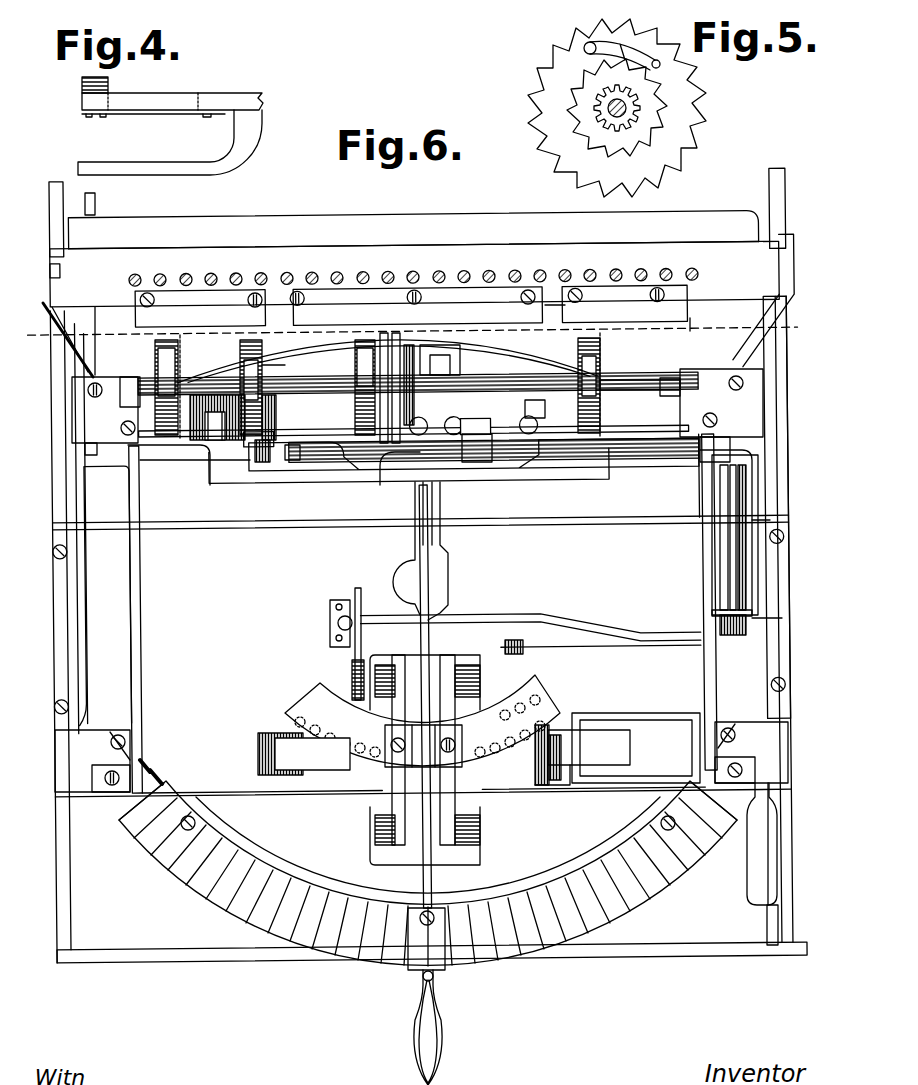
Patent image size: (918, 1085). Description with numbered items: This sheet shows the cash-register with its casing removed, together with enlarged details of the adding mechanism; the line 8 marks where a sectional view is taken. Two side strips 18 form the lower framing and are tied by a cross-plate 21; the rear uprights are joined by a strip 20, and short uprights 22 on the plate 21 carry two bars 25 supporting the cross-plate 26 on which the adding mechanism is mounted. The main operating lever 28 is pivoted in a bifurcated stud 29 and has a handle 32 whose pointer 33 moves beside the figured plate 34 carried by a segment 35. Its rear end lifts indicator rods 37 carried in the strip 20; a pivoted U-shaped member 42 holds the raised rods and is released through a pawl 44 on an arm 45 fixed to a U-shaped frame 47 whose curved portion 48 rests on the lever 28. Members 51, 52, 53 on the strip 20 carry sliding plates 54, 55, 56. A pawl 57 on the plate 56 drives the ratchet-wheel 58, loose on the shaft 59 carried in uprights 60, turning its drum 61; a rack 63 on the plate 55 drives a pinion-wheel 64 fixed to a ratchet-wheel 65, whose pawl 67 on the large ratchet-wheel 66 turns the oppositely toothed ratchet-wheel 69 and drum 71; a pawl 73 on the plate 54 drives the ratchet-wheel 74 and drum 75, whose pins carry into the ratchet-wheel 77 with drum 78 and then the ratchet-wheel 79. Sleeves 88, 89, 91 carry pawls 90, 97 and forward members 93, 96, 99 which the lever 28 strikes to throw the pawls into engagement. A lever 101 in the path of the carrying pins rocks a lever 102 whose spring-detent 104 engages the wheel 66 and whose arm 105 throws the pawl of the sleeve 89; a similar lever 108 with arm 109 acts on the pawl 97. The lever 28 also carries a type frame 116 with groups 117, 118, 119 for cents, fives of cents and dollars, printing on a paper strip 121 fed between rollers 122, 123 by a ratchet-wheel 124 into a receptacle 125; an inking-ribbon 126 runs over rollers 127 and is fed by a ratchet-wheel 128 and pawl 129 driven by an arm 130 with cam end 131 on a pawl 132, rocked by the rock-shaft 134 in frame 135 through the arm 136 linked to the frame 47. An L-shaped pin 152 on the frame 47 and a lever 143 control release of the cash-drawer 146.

In FIG. 6, the section line 8 is at (415, 330).
In FIG. 6, the side strips 18 is at (786, 194).
In FIG. 6, the cross-strip 20 is at (422, 304).
In FIG. 6, the cross-plate 21 is at (420, 511).
In FIG. 6, the short uprights 22 is at (421, 757).
In FIG. 6, the bars 25 is at (140, 645).
In FIG. 6, the cross-plate 26 is at (98, 415).
In FIG. 6, the main operating lever 28 is at (418, 885).
In FIG. 6, the stud 29 is at (408, 578).
In FIG. 6, the handle 32 is at (417, 1040).
In FIG. 6, the pointer 33 is at (434, 975).
In FIG. 6, the figure plate 34 is at (285, 905).
In FIG. 6, the segment 35 is at (230, 858).
In FIG. 6, the indicator rods 37 is at (170, 276).
In FIG. 6, the U-shaped member 42 is at (413, 230).
In FIG. 6, the pawl 44 is at (95, 200).
In FIG. 6, the arm 45 is at (72, 360).
In FIG. 6, the U-shaped frame 47 is at (88, 618).
In FIG. 6, the curved portion 48 is at (512, 345).
In FIG. 6, the member 51 is at (200, 308).
In FIG. 6, the member 52 is at (513, 298).
In FIG. 6, the member 53 is at (624, 303).
In FIG. 6, the sliding plate 54 is at (140, 327).
In FIG. 6, the sliding plate 55 is at (416, 306).
In FIG. 6, the sliding plate 56 is at (683, 327).
In FIG. 6, the pawl 57 is at (579, 308).
In FIG. 6, the ratchet-wheel 58 is at (600, 345).
In FIG. 5, the shaft 59 is at (628, 108).
In FIG. 6, the shaft 59 is at (640, 398).
In FIG. 6, the uprights 60 is at (128, 385).
In FIG. 6, the drum 61 is at (588, 372).
In FIG. 6, the rack 63 is at (388, 345).
In FIG. 5, the pinion-wheel 64 is at (590, 107).
In FIG. 6, the pinion-wheel 64 is at (447, 360).
In FIG. 5, the ratchet-wheel 65 is at (578, 117).
In FIG. 5, the large ratchet-wheel 66 is at (680, 138).
In FIG. 5, the pawl 67 is at (584, 44).
In FIG. 6, the ratchet-wheel 69 is at (368, 342).
In FIG. 6, the drum 71 is at (335, 393).
In FIG. 6, the pawl 73 is at (256, 340).
In FIG. 6, the ratchet-wheel 74 is at (265, 358).
In FIG. 6, the drum 75 is at (240, 360).
In FIG. 6, the ratchet-wheel 77 is at (197, 462).
In FIG. 6, the drum 78 is at (210, 410).
In FIG. 6, the ratchet-wheel 79 is at (178, 445).
In FIG. 6, the sleeve 88 is at (553, 462).
In FIG. 6, the sleeve 89 is at (440, 470).
In FIG. 6, the pawl 90 is at (654, 467).
In FIG. 6, the sleeve 91 is at (292, 462).
In FIG. 6, the forwardly-projecting member 93 is at (495, 475).
In FIG. 6, the forwardly-projecting member 96 is at (471, 457).
In FIG. 6, the pawl 97 is at (262, 462).
In FIG. 6, the forwardly-projecting member 99 is at (310, 478).
In FIG. 6, the lever 101 is at (515, 425).
In FIG. 4, the lever 102 is at (233, 98).
In FIG. 6, the lever 102 is at (450, 420).
In FIG. 4, the spring-detent 104 is at (110, 84).
In FIG. 4, the arm 105 is at (148, 162).
In FIG. 6, the arm 105 is at (390, 485).
In FIG. 6, the lever 108 is at (287, 417).
In FIG. 6, the arm 109 is at (209, 486).
In FIG. 6, the type-carrying frame 116 is at (318, 706).
In FIG. 6, the type group 117 is at (510, 700).
In FIG. 6, the type group 118 is at (365, 738).
In FIG. 6, the type group 119 is at (286, 713).
In FIG. 6, the strip of paper 121 is at (444, 755).
In FIG. 6, the roller 122 is at (545, 785).
In FIG. 6, the lower roller 123 is at (558, 782).
In FIG. 6, the ratchet-wheel 124 is at (530, 655).
In FIG. 6, the receptacle 125 is at (636, 748).
In FIG. 6, the inking-ribbon 126 is at (400, 797).
In FIG. 6, the rollers 127 is at (463, 675).
In FIG. 6, the ratchet-wheel 128 is at (350, 680).
In FIG. 6, the pawl 129 is at (355, 592).
In FIG. 6, the arm 130 is at (492, 615).
In FIG. 6, the cam-shaped end 131 is at (340, 625).
In FIG. 6, the pawl 132 is at (628, 648).
In FIG. 6, the rock-shaft 134 is at (722, 535).
In FIG. 6, the frame 135 is at (730, 570).
In FIG. 6, the upwardly-extending arm 136 is at (720, 463).
In FIG. 6, the lever 143 is at (750, 875).
In FIG. 6, the cash-drawer 146 is at (423, 858).
In FIG. 6, the L-shaped pin 152 is at (730, 606).